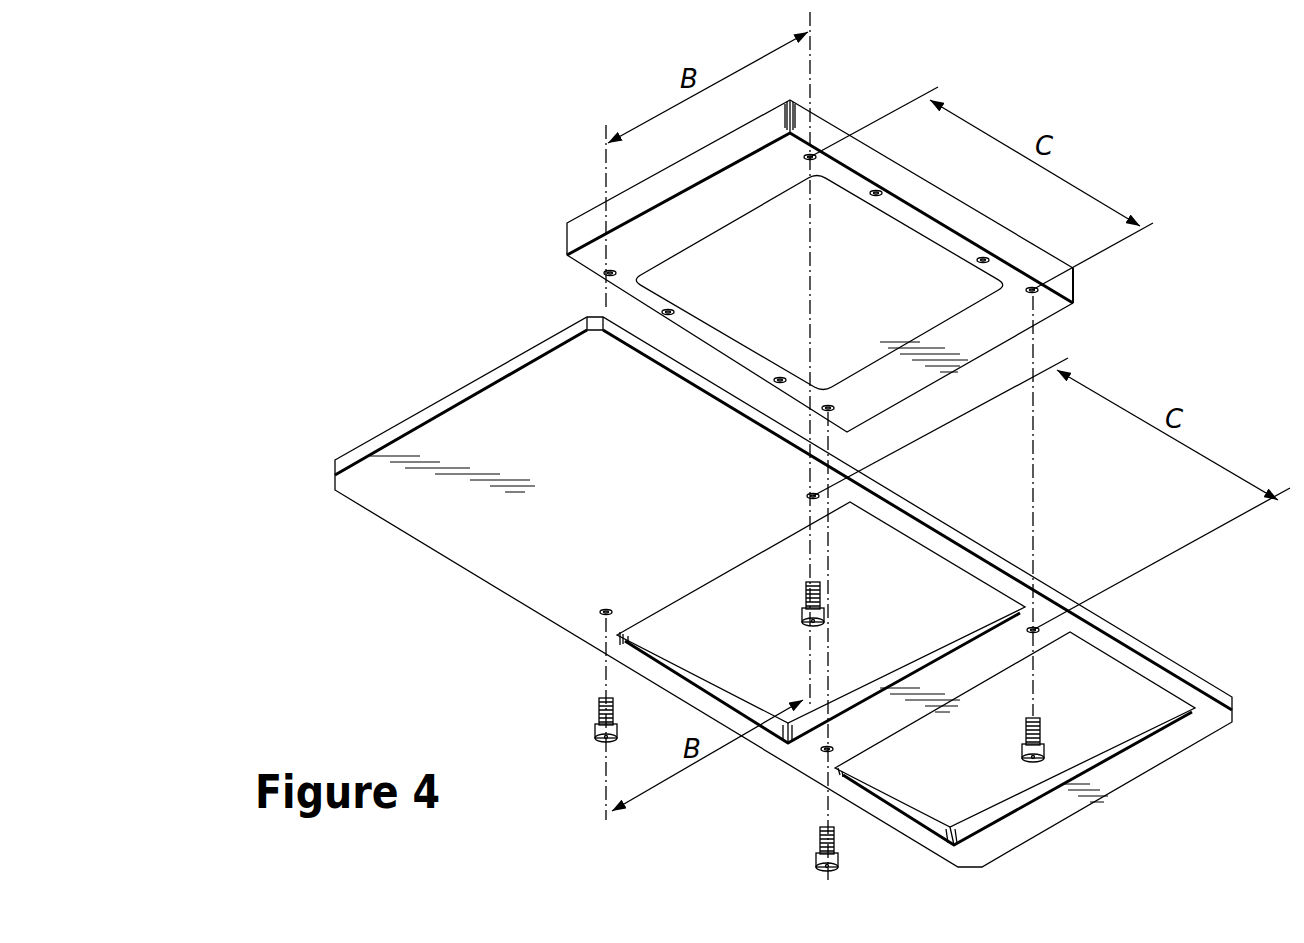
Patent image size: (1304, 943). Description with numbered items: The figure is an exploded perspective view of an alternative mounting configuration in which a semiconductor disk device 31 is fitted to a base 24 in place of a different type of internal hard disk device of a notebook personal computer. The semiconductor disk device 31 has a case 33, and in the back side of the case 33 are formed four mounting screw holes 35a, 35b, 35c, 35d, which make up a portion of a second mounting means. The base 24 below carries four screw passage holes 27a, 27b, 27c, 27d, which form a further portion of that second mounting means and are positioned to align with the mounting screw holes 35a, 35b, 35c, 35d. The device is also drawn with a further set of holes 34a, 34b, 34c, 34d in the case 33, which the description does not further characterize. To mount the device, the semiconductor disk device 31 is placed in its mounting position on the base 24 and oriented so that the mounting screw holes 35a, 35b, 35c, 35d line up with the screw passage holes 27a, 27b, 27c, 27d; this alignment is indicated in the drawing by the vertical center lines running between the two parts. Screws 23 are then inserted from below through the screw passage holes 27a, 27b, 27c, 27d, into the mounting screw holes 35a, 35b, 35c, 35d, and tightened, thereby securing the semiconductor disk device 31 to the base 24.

The semiconductor disk device 31 is at (540, 212).
The base 24 is at (378, 395).
The case 33 is at (1078, 287).
The mounting screw hole 35a is at (605, 278).
The mounting screw hole 35b is at (836, 413).
The mounting screw hole 35c is at (806, 163).
The mounting screw hole 35d is at (1030, 296).
The hole 34a is at (675, 312).
The hole 34b is at (778, 386).
The hole 34c is at (876, 199).
The hole 34d is at (980, 266).
The screw passage hole 27a is at (808, 498).
The screw passage hole 27b is at (603, 618).
The screw passage hole 27c is at (1038, 636).
The screw passage hole 27d is at (822, 755).
The screw 23 is at (804, 603).